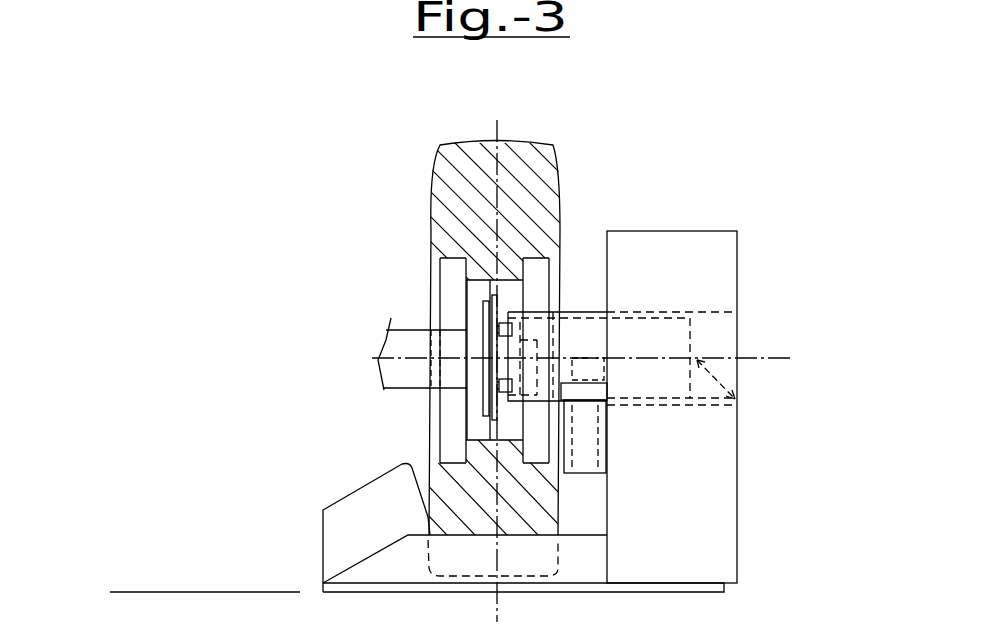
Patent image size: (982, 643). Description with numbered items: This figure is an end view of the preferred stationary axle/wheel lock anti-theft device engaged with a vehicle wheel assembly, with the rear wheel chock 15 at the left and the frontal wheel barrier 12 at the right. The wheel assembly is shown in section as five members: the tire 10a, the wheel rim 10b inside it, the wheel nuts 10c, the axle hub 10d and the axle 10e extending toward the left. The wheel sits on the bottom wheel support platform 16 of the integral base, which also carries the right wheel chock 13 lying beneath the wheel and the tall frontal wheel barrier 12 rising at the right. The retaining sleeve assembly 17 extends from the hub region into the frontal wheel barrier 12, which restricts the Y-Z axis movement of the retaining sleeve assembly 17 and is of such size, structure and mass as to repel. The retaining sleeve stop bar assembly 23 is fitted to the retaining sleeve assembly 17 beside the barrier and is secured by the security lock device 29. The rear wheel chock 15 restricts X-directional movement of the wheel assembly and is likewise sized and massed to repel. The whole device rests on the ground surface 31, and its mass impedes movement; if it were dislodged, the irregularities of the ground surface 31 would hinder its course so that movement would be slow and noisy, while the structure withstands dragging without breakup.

The tire 10a is at (450, 232).
The wheel rim 10b is at (505, 300).
The wheel nuts 10c is at (500, 393).
The axle hub 10d is at (440, 470).
The axle 10e is at (408, 330).
The frontal wheel barrier 12 is at (737, 273).
The right wheel chock 13 is at (580, 535).
The rear wheel chock 15 is at (322, 519).
The bottom wheel support platform 16 is at (567, 578).
The retaining sleeve assembly 17 is at (578, 312).
The retaining sleeve stop bar assembly 23 is at (605, 483).
The security lock device 29 is at (605, 367).
The ground surface 31 is at (175, 592).